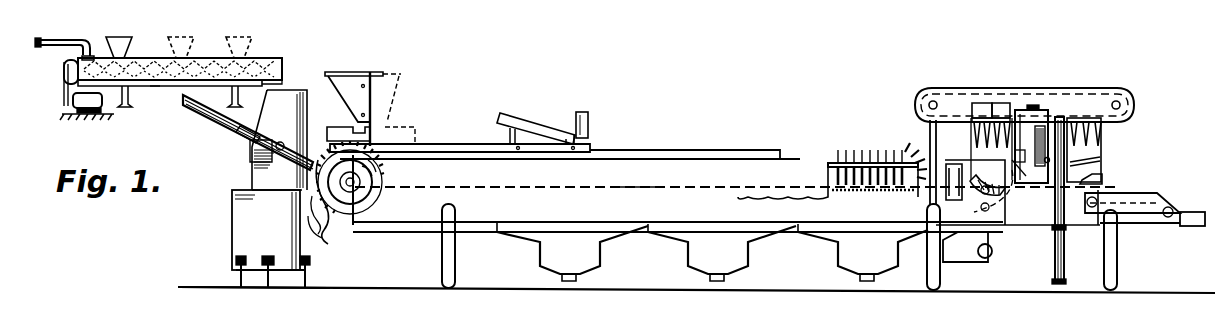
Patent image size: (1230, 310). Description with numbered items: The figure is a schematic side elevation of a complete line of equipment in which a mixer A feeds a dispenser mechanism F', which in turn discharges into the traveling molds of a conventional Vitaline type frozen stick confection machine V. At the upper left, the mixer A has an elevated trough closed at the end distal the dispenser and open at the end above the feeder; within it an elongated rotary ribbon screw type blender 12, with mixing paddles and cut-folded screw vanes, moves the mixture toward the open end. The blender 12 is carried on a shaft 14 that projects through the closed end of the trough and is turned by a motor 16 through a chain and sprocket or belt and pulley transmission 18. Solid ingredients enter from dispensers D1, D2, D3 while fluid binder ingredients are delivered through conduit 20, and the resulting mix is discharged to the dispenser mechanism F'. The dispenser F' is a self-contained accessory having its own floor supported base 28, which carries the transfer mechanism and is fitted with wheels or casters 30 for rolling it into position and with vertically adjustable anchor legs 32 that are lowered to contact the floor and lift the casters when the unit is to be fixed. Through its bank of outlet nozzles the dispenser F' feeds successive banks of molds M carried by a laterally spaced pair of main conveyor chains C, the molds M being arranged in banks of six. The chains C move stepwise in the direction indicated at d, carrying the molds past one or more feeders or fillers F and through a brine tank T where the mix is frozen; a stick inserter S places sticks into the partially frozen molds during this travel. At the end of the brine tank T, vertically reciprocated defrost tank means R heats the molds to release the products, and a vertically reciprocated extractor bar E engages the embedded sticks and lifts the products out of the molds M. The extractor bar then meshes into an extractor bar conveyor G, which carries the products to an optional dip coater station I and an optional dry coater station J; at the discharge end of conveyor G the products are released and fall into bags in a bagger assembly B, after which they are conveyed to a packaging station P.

The conduit 20 is at (52, 51).
The shaft 14 is at (66, 72).
The chain and sprocket or belt and pulley transmission 18 is at (64, 88).
The motor 16 is at (86, 112).
The plastic or semisolid food product mixer A is at (138, 96).
The ribbon screw type blender 12 is at (168, 95).
The dispenser D1 is at (131, 45).
The dispenser D2 is at (189, 45).
The dispenser D3 is at (259, 45).
The dispenser mechanism F' is at (244, 152).
The base 28 is at (234, 223).
The vertically adjustable anchor legs 32 is at (318, 267).
The wheels or casters 30 is at (212, 288).
The main conveyor chains C is at (328, 150).
The direction of conveyor movement d is at (318, 219).
The product forming molds M is at (364, 167).
The feeders or fillers F is at (383, 91).
The stick inserter S is at (552, 124).
The frozen confection forming machine V is at (698, 124).
The brine tank T is at (647, 190).
The extractor bar conveyor G is at (972, 104).
The extractor bar E is at (995, 104).
The dip coater station I is at (1026, 110).
The dry coater station J is at (1054, 209).
The defrost tank means R is at (966, 195).
The bagger assembly B is at (1100, 181).
The packaging station P is at (1184, 209).